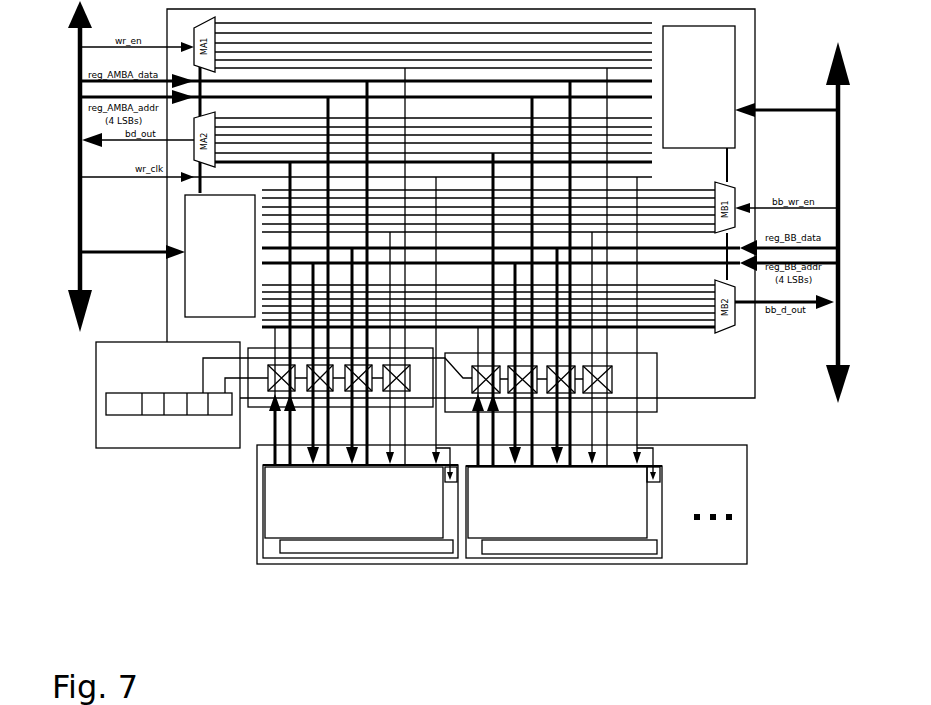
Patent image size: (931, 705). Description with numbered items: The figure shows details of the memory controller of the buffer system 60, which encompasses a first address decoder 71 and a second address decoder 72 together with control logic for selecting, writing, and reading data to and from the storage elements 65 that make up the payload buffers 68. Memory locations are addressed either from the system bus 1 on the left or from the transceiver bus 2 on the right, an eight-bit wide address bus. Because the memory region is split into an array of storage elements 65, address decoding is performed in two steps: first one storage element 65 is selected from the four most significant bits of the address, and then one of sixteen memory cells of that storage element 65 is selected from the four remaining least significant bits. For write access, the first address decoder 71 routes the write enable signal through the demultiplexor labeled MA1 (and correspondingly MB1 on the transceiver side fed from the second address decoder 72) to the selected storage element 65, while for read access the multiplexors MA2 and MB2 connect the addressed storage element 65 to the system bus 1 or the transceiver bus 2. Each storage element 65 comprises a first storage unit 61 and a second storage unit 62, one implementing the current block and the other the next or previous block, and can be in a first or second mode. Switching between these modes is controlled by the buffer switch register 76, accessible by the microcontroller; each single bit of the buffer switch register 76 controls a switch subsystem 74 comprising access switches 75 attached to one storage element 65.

The system bus 1 is at (80, 231).
The transceiver bus 2 is at (838, 228).
The buffer system 60 is at (205, 525).
The first storage unit 61 is at (302, 547).
The second storage unit 62 is at (273, 528).
The storage element 65 is at (368, 558).
The payload buffers 68 is at (747, 490).
The first address decoder 71 is at (167, 256).
The second address decoder 72 is at (750, 87).
The switch subsystem 74 is at (657, 375).
The access switch 75 is at (612, 379).
The buffer switch register 76 is at (168, 448).